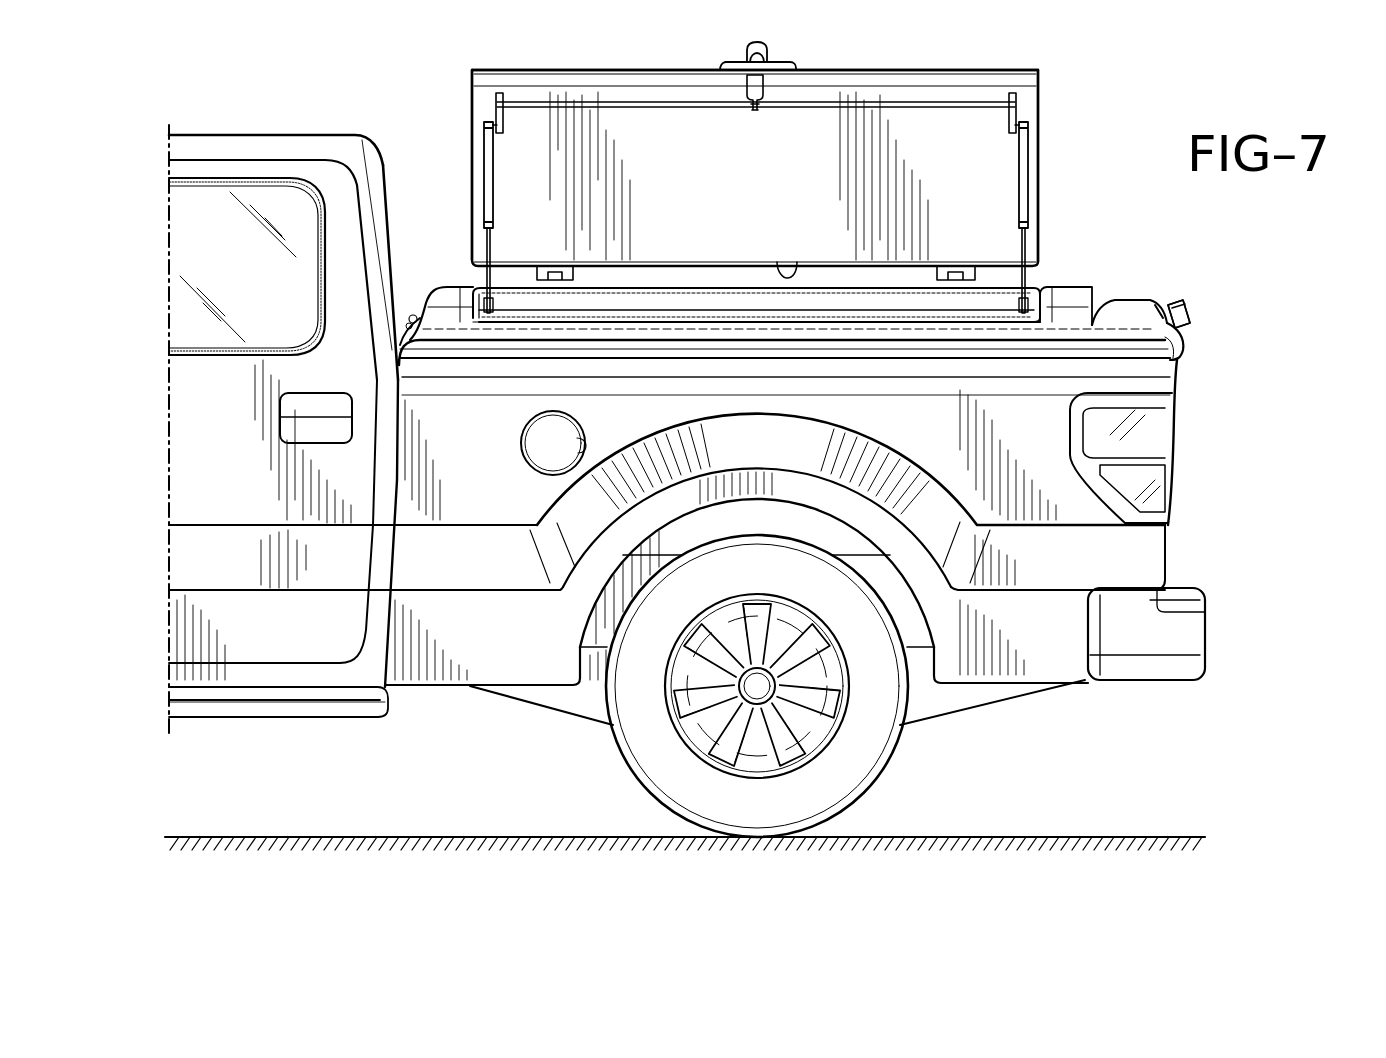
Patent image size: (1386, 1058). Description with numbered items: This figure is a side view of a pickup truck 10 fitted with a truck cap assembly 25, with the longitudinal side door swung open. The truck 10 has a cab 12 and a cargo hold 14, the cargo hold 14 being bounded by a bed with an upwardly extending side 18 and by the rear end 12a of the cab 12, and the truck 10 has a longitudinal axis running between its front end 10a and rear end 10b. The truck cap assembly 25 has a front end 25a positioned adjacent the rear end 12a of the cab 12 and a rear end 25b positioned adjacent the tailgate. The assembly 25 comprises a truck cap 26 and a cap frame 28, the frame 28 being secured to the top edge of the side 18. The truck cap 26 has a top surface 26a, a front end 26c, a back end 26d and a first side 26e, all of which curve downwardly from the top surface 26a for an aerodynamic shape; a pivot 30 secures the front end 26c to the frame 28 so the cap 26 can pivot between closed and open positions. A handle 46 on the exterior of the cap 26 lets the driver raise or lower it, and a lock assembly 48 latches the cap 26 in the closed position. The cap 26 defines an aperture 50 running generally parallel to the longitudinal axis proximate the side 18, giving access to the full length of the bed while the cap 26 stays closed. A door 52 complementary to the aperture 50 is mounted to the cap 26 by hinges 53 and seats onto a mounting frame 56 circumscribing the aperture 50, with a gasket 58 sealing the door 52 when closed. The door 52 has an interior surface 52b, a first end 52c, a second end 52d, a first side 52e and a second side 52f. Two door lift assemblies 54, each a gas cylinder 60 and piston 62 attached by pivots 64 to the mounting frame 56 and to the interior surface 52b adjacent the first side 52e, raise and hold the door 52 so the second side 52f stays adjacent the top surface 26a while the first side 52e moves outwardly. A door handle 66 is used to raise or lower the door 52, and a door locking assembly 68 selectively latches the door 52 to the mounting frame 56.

The pickup truck 10 is at (1180, 730).
The front end 10a is at (150, 160).
The rear end 10b is at (1202, 428).
The cab 12 is at (245, 130).
The rear end of cab 12a is at (392, 182).
The cargo hold 14 is at (1172, 553).
The side 18 is at (486, 457).
The truck cap assembly 25 is at (1143, 290).
The front end 25a is at (437, 285).
The rear end 25b is at (1170, 291).
The truck cap 26 is at (1113, 297).
The top surface 26a is at (1093, 296).
The front end 26c is at (433, 300).
The back end 26d is at (1186, 340).
The first side 26e is at (908, 340).
The cap frame 28 is at (840, 330).
The pivot 30 is at (410, 320).
The handle 46 is at (1192, 310).
The lock assembly 48 is at (1250, 311).
The aperture 50 is at (728, 307).
The door 52 is at (1048, 98).
The interior surface 52b is at (828, 172).
The first end 52c is at (470, 97).
The second end 52d is at (1040, 190).
The first side 52e is at (957, 70).
The second side 52f is at (788, 262).
The hinge 53 is at (548, 270).
The door lift assembly 54 is at (512, 147).
The mounting frame 56 is at (698, 283).
The gasket 58 is at (623, 322).
The gas cylinder 60 is at (494, 178).
The piston 62 is at (490, 245).
The pivot 64 is at (492, 112).
The door handle 66 is at (745, 50).
The door locking assembly 68 is at (748, 112).